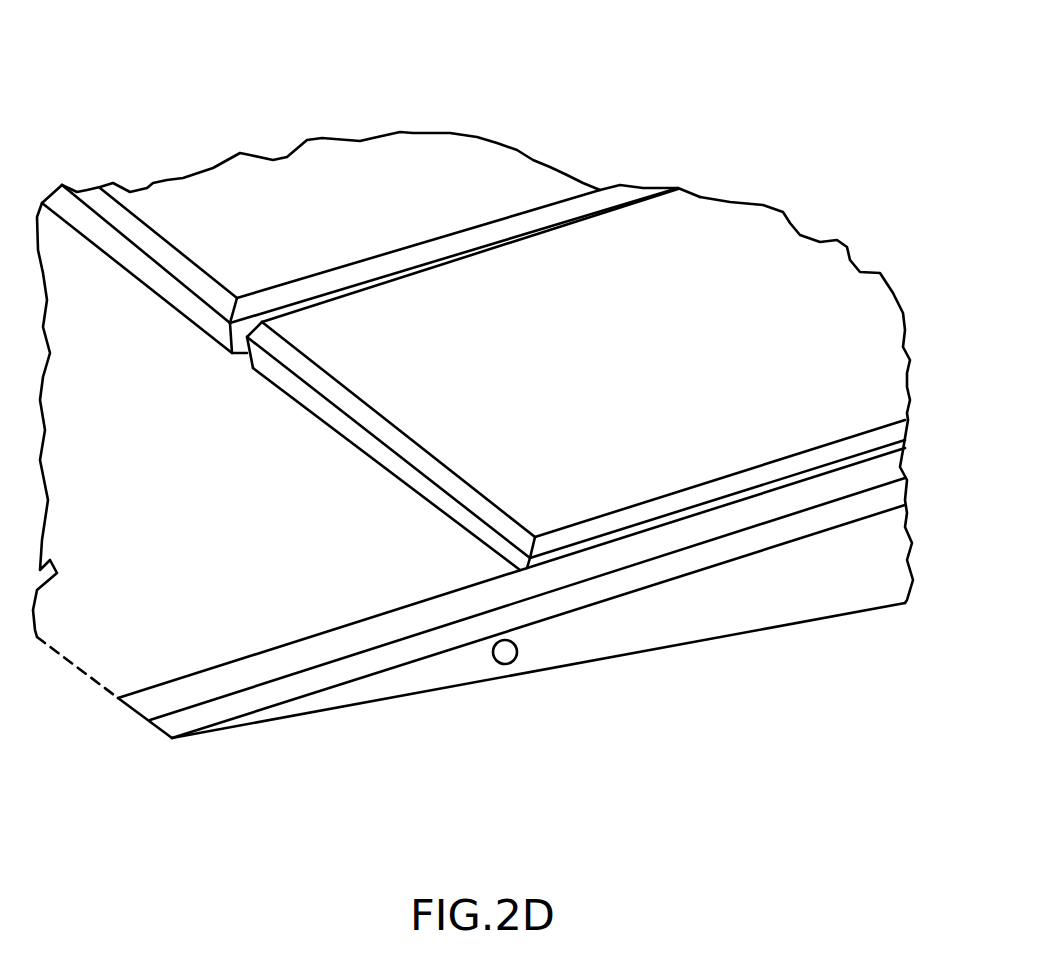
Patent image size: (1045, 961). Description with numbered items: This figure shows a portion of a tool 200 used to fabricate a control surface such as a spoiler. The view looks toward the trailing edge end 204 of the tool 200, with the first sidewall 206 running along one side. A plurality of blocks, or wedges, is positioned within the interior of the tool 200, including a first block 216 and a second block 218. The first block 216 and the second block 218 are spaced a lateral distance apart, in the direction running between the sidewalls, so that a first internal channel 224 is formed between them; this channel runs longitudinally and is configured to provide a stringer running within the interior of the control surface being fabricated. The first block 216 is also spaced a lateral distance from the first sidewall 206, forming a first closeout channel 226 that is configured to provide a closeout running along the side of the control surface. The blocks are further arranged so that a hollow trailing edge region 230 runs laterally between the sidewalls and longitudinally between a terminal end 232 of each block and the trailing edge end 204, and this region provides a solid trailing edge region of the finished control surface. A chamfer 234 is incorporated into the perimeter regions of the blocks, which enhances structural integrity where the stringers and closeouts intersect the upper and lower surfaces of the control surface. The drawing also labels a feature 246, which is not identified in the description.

The tool 200 is at (207, 100).
The trailing edge end 204 is at (70, 658).
The first sidewall 206 is at (657, 625).
The first block 216 is at (858, 360).
The second block 218 is at (490, 150).
The first internal channel 224 is at (565, 192).
The first closeout channel 226 is at (865, 432).
The hollow trailing edge region 230 is at (128, 646).
The terminal end 232 is at (146, 270).
The chamfer 234 is at (145, 242).
The hole 246 is at (505, 664).